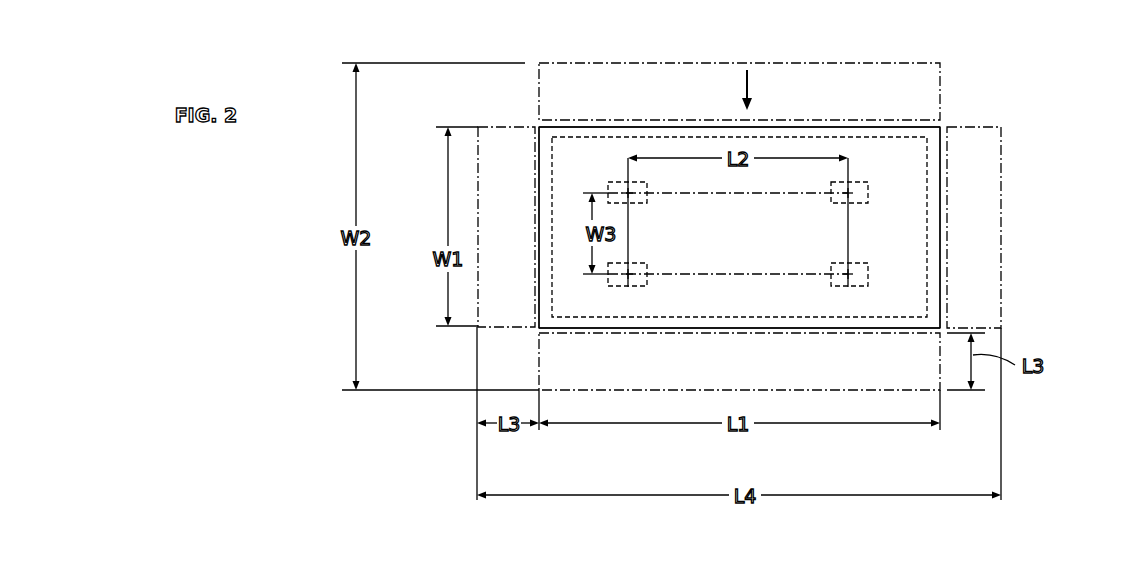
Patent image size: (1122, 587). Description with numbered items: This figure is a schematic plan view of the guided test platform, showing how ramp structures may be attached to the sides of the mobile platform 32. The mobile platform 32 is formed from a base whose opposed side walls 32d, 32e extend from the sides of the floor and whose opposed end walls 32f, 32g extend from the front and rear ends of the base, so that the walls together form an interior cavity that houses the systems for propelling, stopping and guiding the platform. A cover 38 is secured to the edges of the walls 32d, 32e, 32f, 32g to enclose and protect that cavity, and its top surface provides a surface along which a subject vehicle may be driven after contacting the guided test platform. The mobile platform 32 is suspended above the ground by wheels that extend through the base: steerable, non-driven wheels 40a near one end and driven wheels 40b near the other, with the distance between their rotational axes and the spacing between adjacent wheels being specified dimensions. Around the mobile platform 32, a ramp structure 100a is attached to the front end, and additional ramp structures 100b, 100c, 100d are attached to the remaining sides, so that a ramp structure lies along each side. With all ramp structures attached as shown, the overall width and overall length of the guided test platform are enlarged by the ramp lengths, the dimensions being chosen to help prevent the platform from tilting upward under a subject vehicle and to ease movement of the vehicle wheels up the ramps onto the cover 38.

The mobile platform 32 is at (882, 242).
The side wall 32d is at (797, 330).
The side wall 32e is at (795, 130).
The end wall 32f is at (538, 168).
The end wall 32g is at (942, 186).
The cover 38 is at (590, 170).
The steerable wheels 40a is at (637, 202).
The driven wheels 40b is at (838, 197).
The ramp structure 100a is at (492, 277).
The ramp structure 100b is at (660, 395).
The ramp structure 100c is at (655, 75).
The ramp structure 100d is at (988, 277).